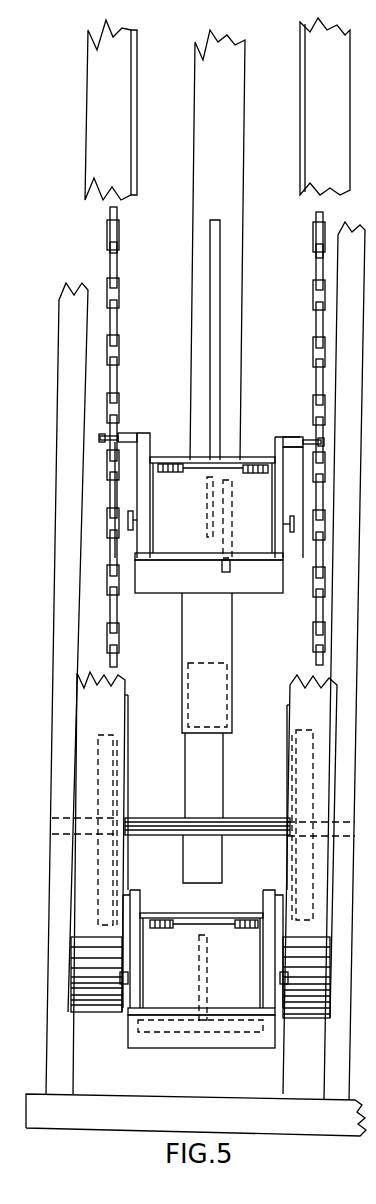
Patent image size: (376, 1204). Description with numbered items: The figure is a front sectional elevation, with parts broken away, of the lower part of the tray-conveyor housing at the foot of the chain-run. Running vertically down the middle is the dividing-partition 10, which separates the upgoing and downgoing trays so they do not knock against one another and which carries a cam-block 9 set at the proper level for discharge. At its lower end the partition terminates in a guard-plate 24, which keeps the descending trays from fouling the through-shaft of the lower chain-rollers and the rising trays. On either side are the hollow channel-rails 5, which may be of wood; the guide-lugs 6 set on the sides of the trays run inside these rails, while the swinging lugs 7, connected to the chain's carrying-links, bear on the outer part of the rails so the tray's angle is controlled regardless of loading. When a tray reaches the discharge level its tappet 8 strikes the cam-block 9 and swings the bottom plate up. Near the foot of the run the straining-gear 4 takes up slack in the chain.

The channel-rails 5 is at (140, 108).
The dividing-partition 10 is at (217, 245).
The cam-block 9 is at (215, 350).
The swinging lugs 7 is at (125, 433).
The guide-lugs 6 is at (130, 510).
The tappet 8 is at (231, 568).
The straining-gear 4 is at (149, 800).
The guard-plate 24 is at (202, 859).